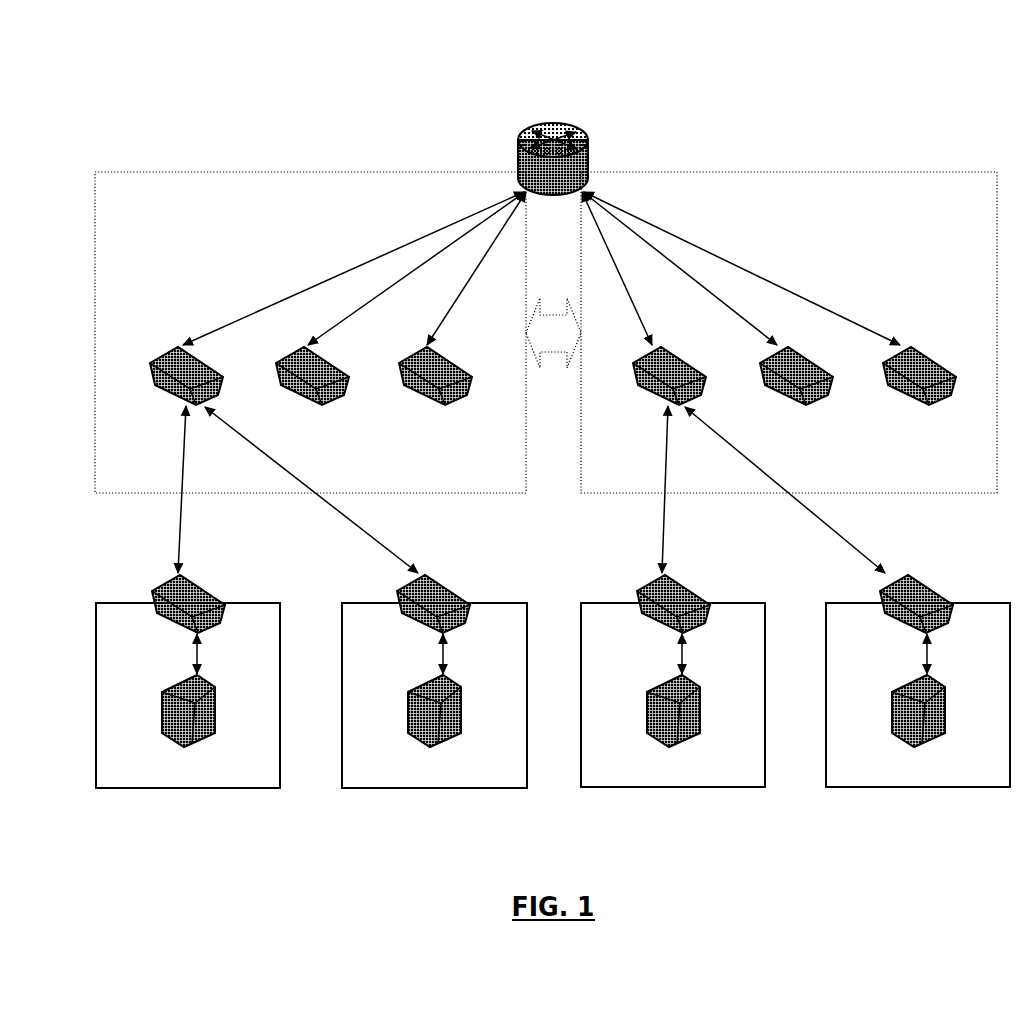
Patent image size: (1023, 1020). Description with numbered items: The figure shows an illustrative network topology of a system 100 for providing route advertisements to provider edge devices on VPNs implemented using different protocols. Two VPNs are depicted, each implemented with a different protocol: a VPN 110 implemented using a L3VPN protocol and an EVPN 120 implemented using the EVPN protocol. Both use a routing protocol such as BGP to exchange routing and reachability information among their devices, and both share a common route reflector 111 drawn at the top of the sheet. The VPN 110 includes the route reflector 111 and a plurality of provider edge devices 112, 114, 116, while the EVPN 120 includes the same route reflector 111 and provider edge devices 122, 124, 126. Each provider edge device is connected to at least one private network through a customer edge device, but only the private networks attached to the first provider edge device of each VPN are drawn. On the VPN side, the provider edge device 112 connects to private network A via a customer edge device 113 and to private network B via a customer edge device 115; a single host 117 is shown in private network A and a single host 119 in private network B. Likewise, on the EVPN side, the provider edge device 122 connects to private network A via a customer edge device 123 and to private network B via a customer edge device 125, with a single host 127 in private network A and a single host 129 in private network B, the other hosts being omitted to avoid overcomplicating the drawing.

The system 100 is at (570, 22).
The route reflector 111 is at (554, 144).
The VPN 110 is at (310, 352).
The EVPN 120 is at (789, 352).
The provider edge device 112 is at (186, 394).
The provider edge device 114 is at (312, 394).
The provider edge device 116 is at (435, 394).
The provider edge device 122 is at (669, 394).
The provider edge device 124 is at (796, 394).
The provider edge device 126 is at (919, 394).
The customer edge device 113 is at (188, 621).
The customer edge device 115 is at (433, 621).
The customer edge device 123 is at (673, 621).
The customer edge device 125 is at (916, 621).
The host 117 is at (188, 728).
The host 119 is at (434, 728).
The host 127 is at (673, 728).
The host 129 is at (918, 728).